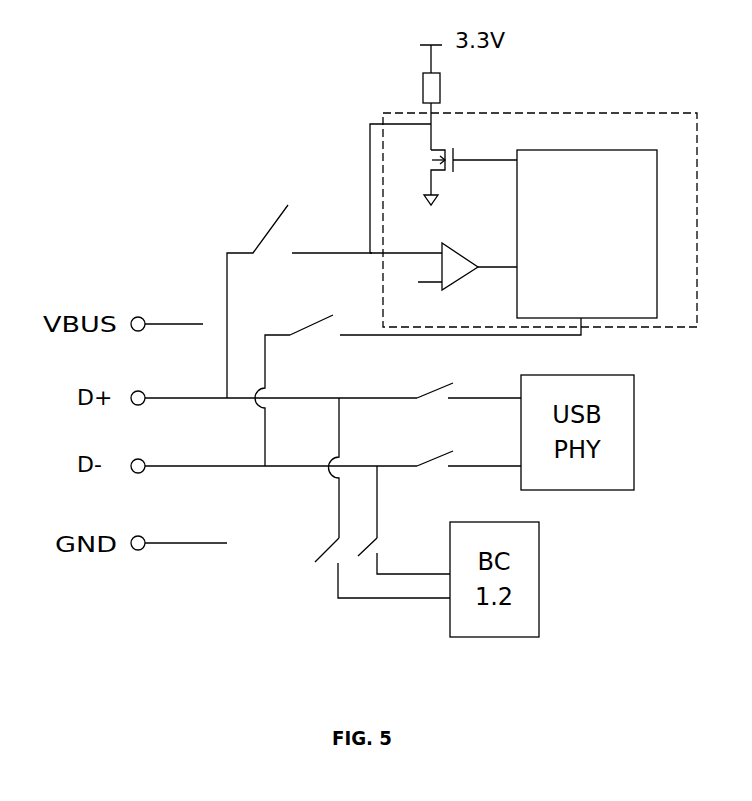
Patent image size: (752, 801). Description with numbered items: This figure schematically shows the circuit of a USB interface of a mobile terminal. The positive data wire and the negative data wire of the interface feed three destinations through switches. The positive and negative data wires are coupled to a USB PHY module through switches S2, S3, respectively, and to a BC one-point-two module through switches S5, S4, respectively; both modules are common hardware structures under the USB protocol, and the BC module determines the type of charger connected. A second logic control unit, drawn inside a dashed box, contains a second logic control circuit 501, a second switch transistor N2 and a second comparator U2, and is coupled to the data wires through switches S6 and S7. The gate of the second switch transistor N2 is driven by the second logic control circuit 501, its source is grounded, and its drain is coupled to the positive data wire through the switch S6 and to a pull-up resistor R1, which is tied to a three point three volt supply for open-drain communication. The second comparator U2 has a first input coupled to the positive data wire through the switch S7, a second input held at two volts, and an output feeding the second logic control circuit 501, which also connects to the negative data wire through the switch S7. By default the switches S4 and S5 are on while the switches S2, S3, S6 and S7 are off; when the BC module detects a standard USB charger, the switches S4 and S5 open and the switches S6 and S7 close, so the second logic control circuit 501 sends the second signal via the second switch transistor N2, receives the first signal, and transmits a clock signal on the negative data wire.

The second logic control circuit 501 is at (556, 149).
The pull-up resistor R1 is at (453, 88).
The second switch transistor N2 is at (470, 167).
The second comparator U2 is at (443, 280).
The switch S2 is at (469, 382).
The switch S3 is at (469, 448).
The switch S4 is at (404, 550).
The switch S5 is at (367, 563).
The switch S6 is at (296, 301).
The switch S7 is at (294, 383).